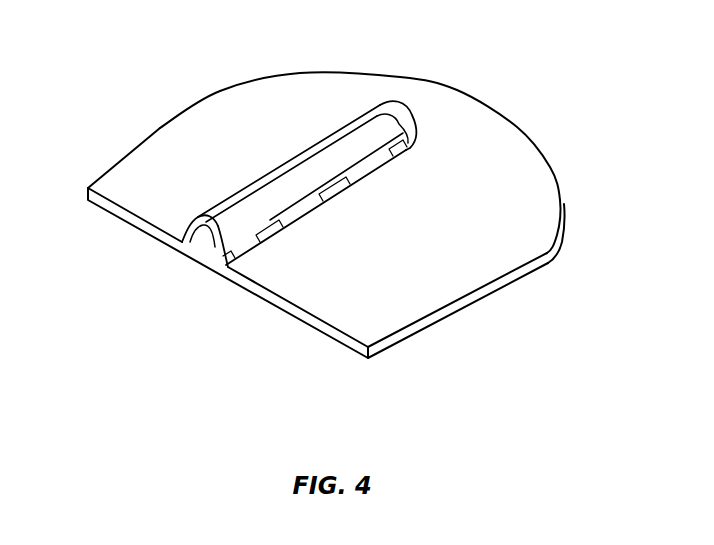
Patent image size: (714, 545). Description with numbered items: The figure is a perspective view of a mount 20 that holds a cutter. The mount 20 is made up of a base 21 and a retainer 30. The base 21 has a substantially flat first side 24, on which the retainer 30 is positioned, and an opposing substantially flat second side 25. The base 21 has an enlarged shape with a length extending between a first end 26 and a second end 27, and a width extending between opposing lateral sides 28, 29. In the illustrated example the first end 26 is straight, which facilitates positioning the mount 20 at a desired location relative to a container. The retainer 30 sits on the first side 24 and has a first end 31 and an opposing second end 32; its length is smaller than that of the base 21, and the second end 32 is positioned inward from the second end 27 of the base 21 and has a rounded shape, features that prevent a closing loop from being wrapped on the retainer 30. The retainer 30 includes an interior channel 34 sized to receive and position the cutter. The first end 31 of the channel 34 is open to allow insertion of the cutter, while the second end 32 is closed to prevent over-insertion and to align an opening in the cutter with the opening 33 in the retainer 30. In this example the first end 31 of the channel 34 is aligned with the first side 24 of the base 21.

The mount 20 is at (572, 82).
The base 21 is at (530, 178).
The first side 24 is at (283, 97).
The second side 25 is at (427, 330).
The first end 26 is at (117, 215).
The second end 27 is at (455, 90).
The lateral side 28 is at (535, 267).
The lateral side 29 is at (220, 90).
The retainer 30 is at (268, 197).
The first end 31 is at (220, 260).
The second end 32 is at (407, 117).
The opening 33 is at (358, 127).
The interior channel 34 is at (207, 248).